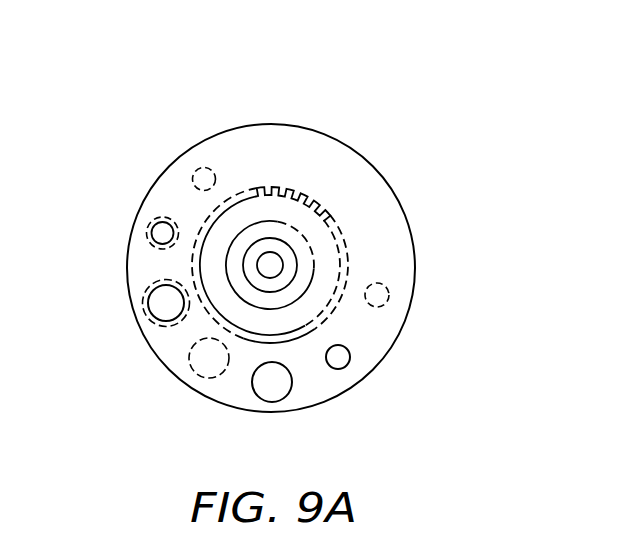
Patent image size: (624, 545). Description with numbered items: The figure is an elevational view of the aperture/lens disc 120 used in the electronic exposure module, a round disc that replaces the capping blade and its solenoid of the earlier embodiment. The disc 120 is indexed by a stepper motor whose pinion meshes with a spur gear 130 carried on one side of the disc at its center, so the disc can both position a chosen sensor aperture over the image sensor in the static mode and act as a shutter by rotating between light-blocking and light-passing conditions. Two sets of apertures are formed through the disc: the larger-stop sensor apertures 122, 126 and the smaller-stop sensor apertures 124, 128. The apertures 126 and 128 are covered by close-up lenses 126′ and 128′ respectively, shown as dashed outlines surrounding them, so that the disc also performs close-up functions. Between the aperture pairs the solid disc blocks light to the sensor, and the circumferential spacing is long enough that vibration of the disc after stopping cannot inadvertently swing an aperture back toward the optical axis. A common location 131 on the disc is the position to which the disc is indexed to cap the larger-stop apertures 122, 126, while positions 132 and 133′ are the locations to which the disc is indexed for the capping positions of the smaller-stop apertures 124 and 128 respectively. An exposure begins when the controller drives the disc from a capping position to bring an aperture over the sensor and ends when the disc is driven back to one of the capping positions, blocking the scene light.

The aperture/lens disc 120 is at (326, 128).
The spur gear 130 is at (313, 204).
The f/11 sensor aperture 128 is at (146, 233).
The close-up lens 128′ is at (162, 215).
The capping position 133′ is at (204, 165).
The f/4 sensor aperture 126 is at (146, 284).
The close-up lens 126′ is at (156, 329).
The common capping location 131 is at (216, 385).
The f/4 sensor aperture 122 is at (298, 395).
The f/11 sensor aperture 124 is at (354, 358).
The capping position 132 is at (394, 300).